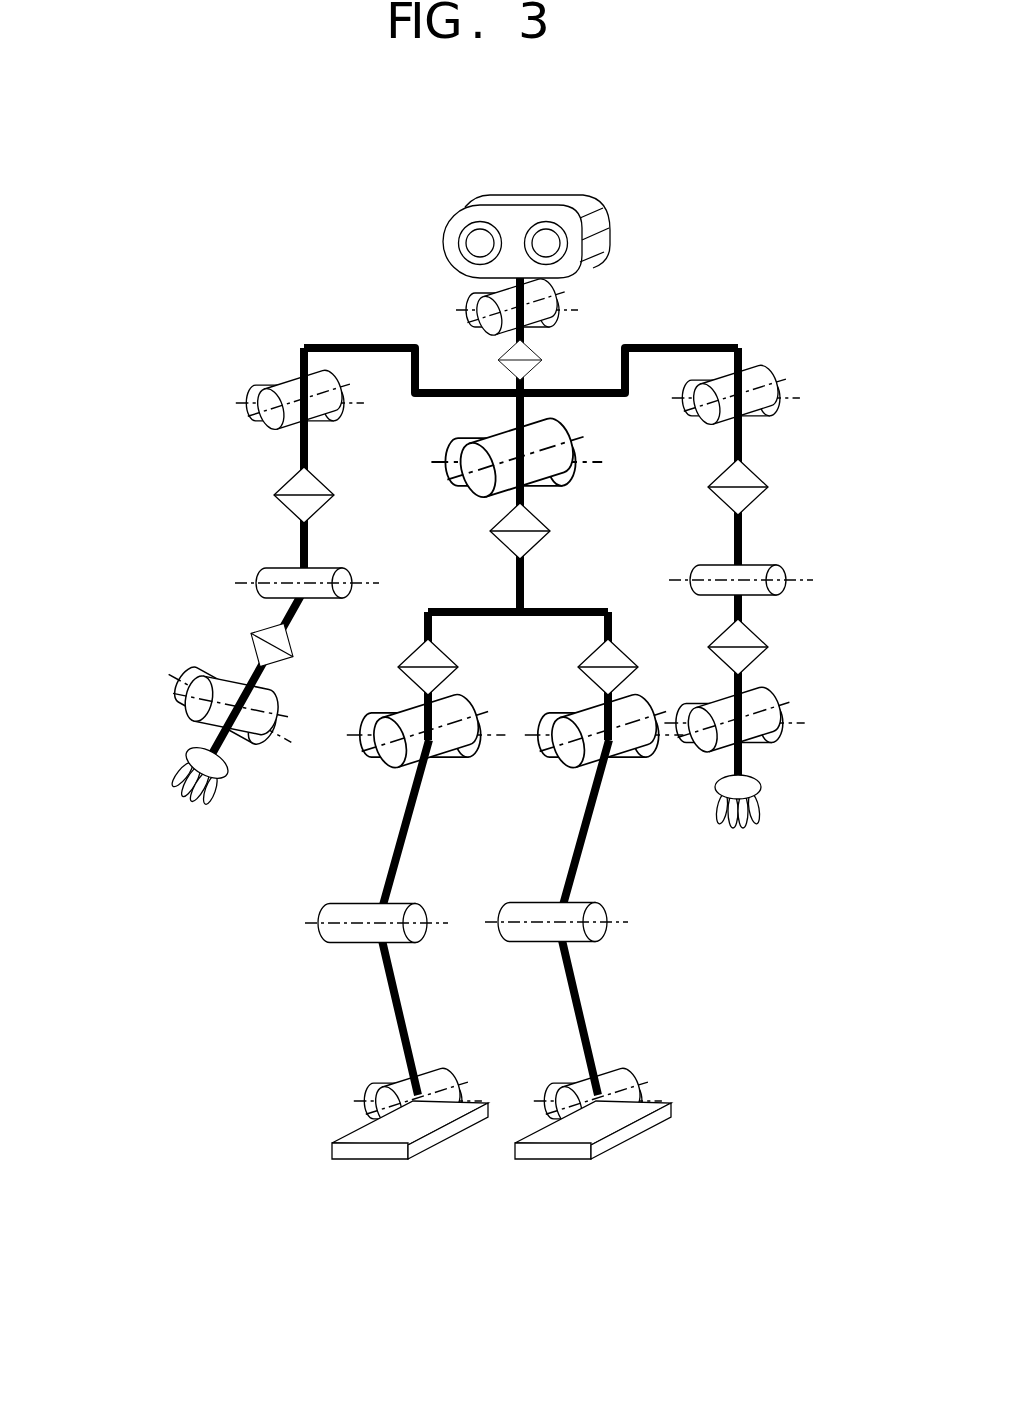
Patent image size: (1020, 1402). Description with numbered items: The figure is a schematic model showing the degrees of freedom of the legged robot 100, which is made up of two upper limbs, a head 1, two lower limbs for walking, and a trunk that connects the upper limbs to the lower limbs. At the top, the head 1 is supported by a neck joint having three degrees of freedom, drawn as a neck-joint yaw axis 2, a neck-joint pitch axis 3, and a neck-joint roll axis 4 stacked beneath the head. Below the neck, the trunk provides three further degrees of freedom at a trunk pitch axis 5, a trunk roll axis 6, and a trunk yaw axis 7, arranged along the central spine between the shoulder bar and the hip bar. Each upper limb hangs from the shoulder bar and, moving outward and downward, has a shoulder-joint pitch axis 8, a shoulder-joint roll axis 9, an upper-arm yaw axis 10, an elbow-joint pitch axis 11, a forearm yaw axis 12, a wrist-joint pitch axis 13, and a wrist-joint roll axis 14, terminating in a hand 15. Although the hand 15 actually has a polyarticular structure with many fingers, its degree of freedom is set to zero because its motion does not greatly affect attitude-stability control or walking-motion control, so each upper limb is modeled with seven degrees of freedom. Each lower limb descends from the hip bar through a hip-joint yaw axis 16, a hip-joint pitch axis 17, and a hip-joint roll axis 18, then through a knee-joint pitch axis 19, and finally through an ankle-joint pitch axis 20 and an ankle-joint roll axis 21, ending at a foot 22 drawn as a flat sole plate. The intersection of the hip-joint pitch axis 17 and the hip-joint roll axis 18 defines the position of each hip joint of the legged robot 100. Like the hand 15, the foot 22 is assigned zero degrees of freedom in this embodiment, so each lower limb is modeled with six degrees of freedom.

The legged robot 100 is at (303, 1207).
The head 1 is at (568, 202).
The neck-joint yaw axis 2 is at (545, 368).
The neck-joint pitch axis 3 is at (560, 318).
The neck-joint roll axis 4 is at (545, 294).
The trunk pitch axis 5 is at (575, 475).
The trunk roll axis 6 is at (556, 432).
The trunk yaw axis 7 is at (548, 525).
The shoulder-joint pitch axis 8 is at (255, 393).
The shoulder-joint roll axis 9 is at (267, 420).
The upper-arm yaw axis 10 is at (285, 475).
The elbow-joint pitch axis 11 is at (288, 568).
The forearm yaw axis 12 is at (252, 650).
The wrist-joint pitch axis 13 is at (208, 682).
The wrist-joint roll axis 14 is at (192, 700).
The hand 15 is at (172, 758).
The hip-joint yaw axis 16 is at (627, 653).
The hip-joint pitch axis 17 is at (650, 742).
The hip-joint roll axis 18 is at (560, 762).
The knee-joint pitch axis 19 is at (600, 930).
The ankle-joint pitch axis 20 is at (632, 1110).
The ankle-joint roll axis 21 is at (630, 1076).
The foot 22 is at (577, 1147).